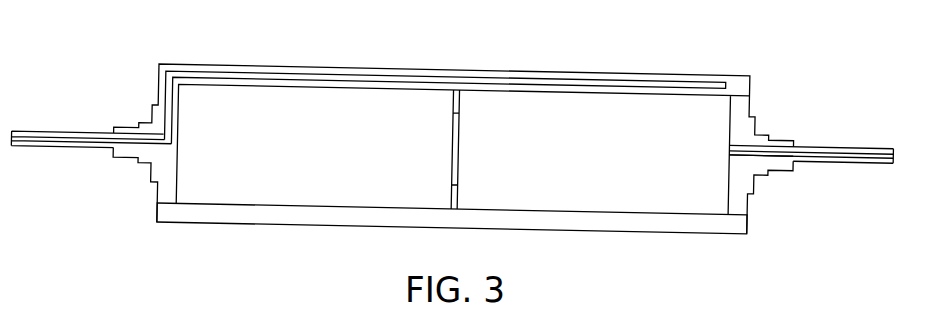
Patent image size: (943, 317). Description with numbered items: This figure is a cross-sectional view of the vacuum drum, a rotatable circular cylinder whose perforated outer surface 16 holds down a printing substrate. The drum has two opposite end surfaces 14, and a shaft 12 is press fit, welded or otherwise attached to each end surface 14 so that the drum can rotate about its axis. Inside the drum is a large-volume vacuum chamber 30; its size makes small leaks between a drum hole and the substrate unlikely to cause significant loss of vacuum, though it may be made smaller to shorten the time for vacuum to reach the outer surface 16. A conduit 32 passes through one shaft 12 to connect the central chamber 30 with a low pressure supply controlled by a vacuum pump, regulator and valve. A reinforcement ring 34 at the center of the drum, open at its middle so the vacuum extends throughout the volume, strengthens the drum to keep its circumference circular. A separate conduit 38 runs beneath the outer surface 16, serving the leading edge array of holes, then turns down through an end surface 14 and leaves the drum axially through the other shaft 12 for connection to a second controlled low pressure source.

The shaft 12 is at (113, 129).
The end surface 14 is at (157, 200).
The outer surface 16 is at (302, 228).
The vacuum chamber 30 is at (347, 136).
The conduit 32 is at (750, 160).
The reinforcement ring 34 is at (459, 99).
The conduit 38 is at (266, 80).